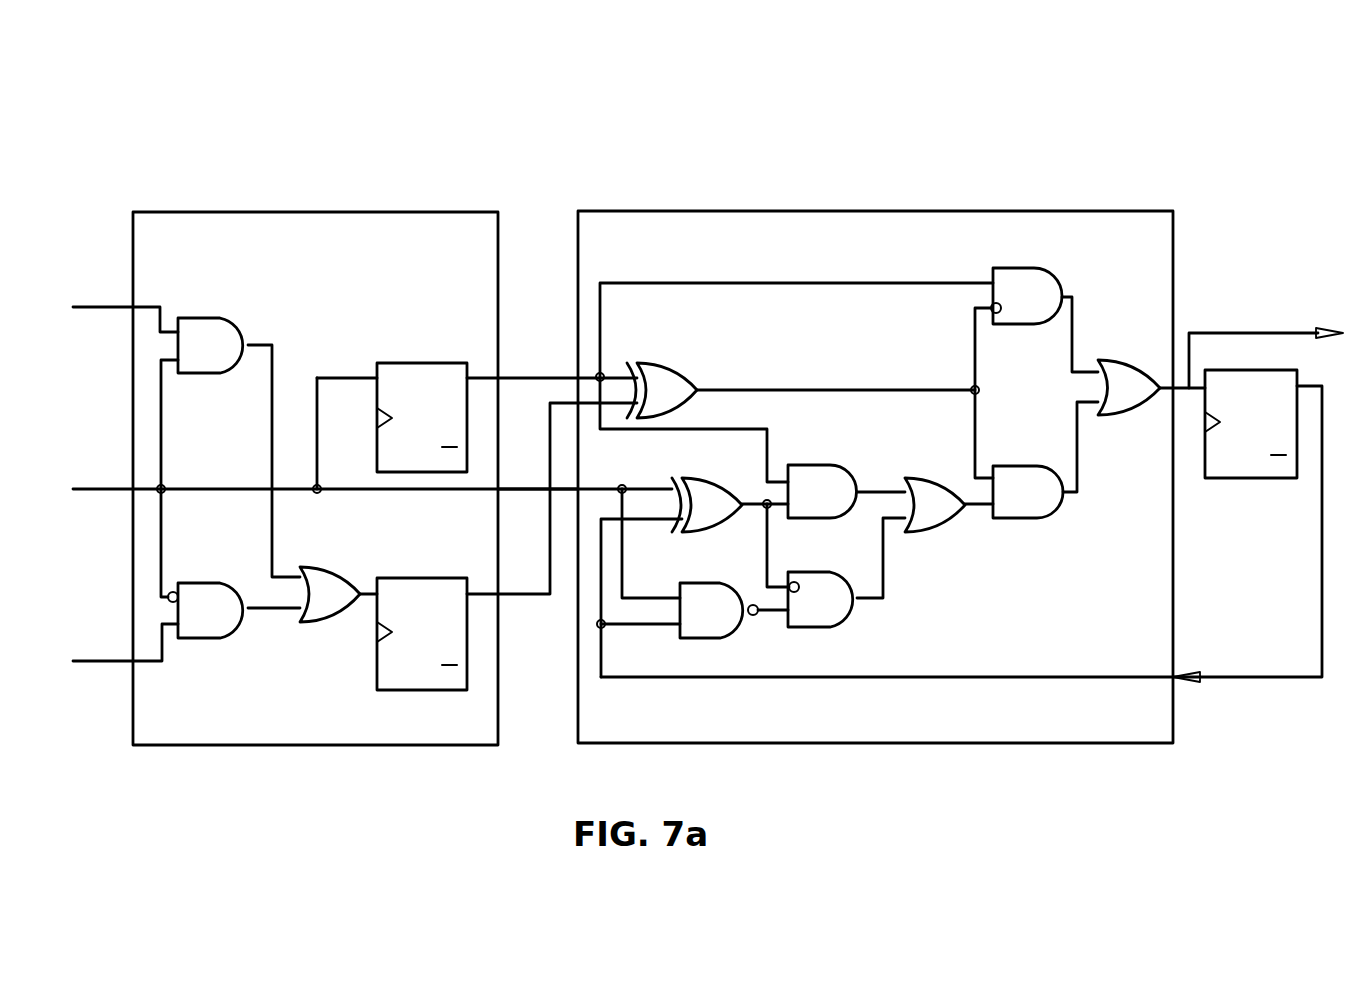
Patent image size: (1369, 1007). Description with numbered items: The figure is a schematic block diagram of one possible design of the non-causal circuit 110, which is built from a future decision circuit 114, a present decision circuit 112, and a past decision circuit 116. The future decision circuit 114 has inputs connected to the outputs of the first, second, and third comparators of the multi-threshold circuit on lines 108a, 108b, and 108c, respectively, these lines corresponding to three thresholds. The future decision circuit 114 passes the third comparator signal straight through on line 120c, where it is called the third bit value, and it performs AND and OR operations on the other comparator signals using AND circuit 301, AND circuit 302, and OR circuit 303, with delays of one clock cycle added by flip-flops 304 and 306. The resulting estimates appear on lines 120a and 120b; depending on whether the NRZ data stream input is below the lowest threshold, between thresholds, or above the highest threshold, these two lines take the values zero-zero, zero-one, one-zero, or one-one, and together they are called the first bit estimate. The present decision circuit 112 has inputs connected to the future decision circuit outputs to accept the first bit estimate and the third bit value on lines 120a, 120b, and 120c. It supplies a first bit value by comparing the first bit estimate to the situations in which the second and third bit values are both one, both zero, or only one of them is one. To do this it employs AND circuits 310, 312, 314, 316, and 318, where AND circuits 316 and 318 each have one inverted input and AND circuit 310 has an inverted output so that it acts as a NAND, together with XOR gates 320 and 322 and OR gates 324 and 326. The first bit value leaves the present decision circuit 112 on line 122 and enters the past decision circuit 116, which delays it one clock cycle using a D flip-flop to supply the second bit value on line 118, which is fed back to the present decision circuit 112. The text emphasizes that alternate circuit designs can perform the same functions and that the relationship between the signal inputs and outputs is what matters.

The non-causal circuit 110 is at (1146, 148).
The present decision circuit 112 is at (1062, 727).
The future decision circuit 114 is at (306, 724).
The past decision circuit 116 is at (1247, 478).
The line (second bit value) 118 is at (1300, 412).
The line (first bit value) 122 is at (1248, 332).
The line from first comparator 108a is at (100, 305).
The line from second comparator 108b is at (100, 660).
The line from third comparator 108c is at (100, 487).
The line (first bit estimate) 120a is at (528, 376).
The line (first bit estimate) 120b is at (525, 598).
The line (third bit value) 120c is at (417, 493).
The AND circuit 301 is at (205, 318).
The AND circuit 302 is at (206, 583).
The OR circuit 303 is at (308, 567).
The flip-flop 304 is at (418, 363).
The flip-flop 306 is at (391, 578).
The AND circuit (NAND) 310 is at (700, 640).
The AND circuit 312 is at (808, 572).
The AND circuit 314 is at (808, 465).
The AND circuit 316 is at (1015, 268).
The AND circuit 318 is at (1000, 466).
The XOR gate 320 is at (645, 363).
The XOR gate 322 is at (719, 478).
The OR gate 324 is at (913, 478).
The OR gate 326 is at (1119, 360).